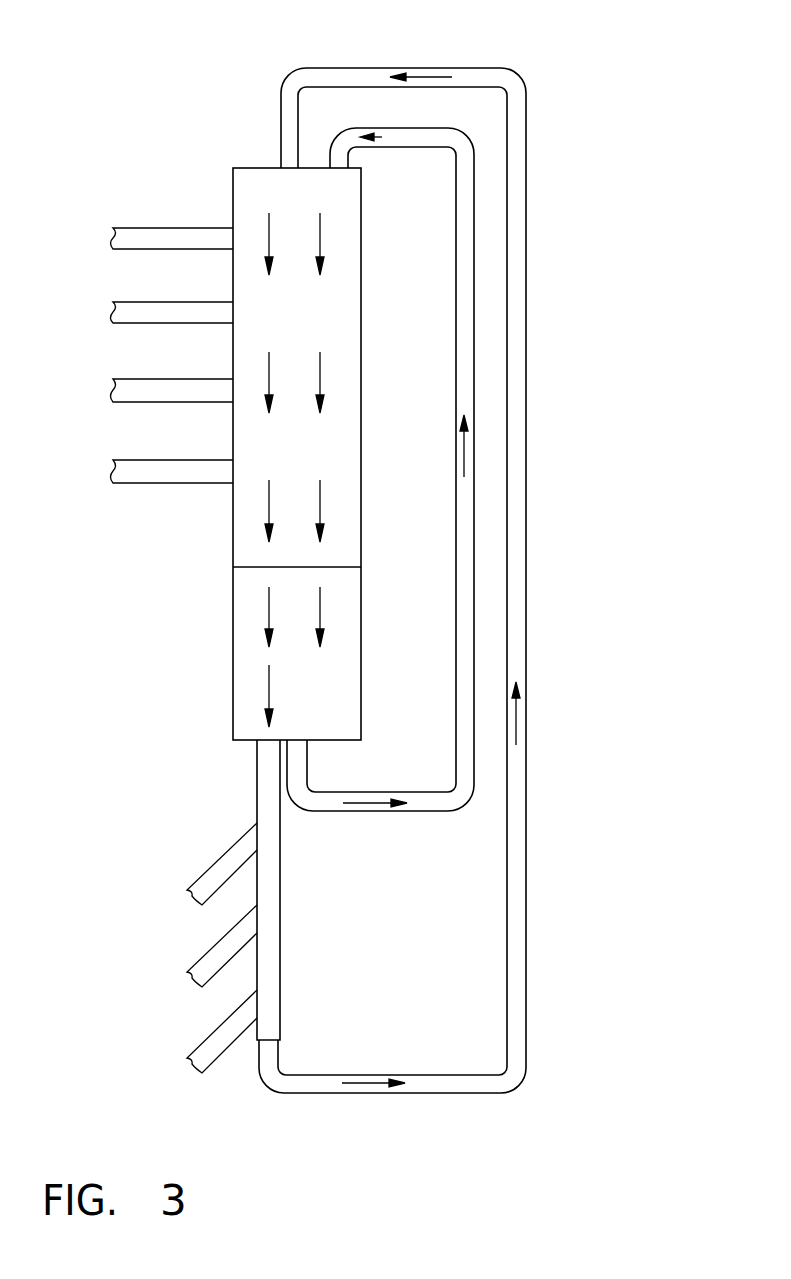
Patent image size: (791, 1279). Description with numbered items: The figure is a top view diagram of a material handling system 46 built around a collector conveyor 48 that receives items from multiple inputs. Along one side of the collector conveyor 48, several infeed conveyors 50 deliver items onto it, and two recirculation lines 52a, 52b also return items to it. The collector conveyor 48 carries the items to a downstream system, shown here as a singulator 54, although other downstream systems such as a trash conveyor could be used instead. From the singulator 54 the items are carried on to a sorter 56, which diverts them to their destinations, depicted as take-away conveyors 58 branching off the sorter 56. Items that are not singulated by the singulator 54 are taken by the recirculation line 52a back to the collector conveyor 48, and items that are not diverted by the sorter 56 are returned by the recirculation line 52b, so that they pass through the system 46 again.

The material handling system 46 is at (441, 557).
The collector conveyor 48 is at (260, 167).
The infeed conveyors 50 is at (137, 238).
The recirculation line 52a is at (462, 508).
The recirculation line 52b is at (513, 513).
The singulator 54 is at (232, 685).
The sorter 56 is at (282, 890).
The take-away conveyors 58 is at (203, 890).